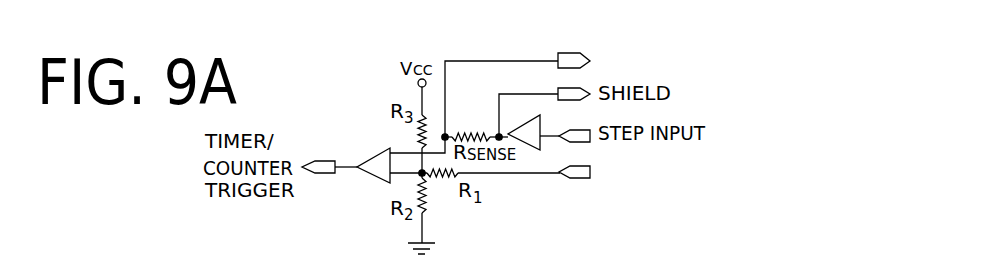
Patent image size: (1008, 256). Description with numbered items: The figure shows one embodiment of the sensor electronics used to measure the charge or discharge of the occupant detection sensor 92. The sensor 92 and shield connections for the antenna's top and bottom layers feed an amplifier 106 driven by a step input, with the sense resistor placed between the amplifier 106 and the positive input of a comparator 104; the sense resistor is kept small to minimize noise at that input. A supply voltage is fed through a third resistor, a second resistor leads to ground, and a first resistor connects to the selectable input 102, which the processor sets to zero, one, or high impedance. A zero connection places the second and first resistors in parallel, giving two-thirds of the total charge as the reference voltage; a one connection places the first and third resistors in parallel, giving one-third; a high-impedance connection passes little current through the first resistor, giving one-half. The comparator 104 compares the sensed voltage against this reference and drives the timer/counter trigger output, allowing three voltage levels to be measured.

The sensor 92 is at (573, 53).
The input 102 is at (584, 178).
The comparator 104 is at (372, 150).
The amplifier 106 is at (538, 126).